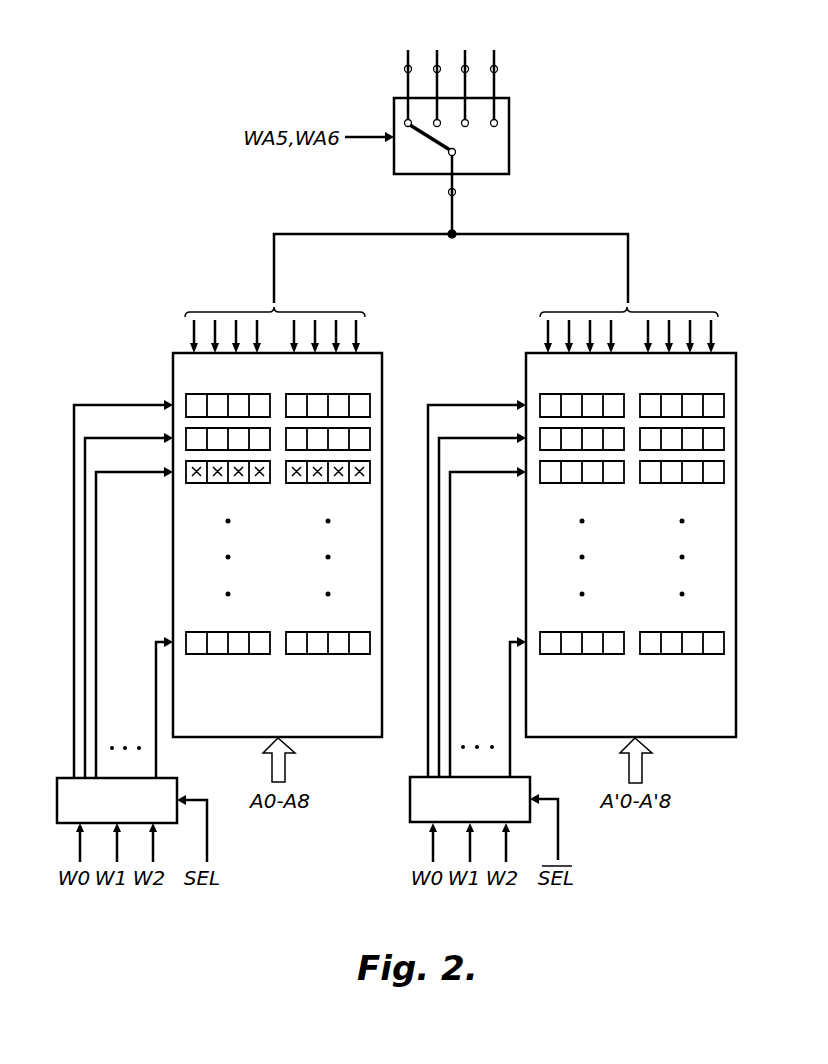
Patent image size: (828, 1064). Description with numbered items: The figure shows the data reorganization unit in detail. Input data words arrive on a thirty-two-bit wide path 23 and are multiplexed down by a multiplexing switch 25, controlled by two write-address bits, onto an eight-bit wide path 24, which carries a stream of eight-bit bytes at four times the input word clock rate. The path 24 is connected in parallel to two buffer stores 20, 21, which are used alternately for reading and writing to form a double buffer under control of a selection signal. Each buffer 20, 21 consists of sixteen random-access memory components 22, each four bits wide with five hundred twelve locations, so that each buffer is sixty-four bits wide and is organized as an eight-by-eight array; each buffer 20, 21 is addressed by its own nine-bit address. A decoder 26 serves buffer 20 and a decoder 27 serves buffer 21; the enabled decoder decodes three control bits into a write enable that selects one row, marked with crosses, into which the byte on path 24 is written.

The buffer store 20 is at (173, 370).
The buffer store 21 is at (526, 370).
The random-access memory component 22 is at (263, 655).
The 32-bit wide path 23 is at (397, 43).
The 8-bit wide path 24 is at (453, 211).
The multiplexing switch 25 is at (509, 142).
The decoder 26 is at (178, 778).
The decoder 27 is at (531, 782).